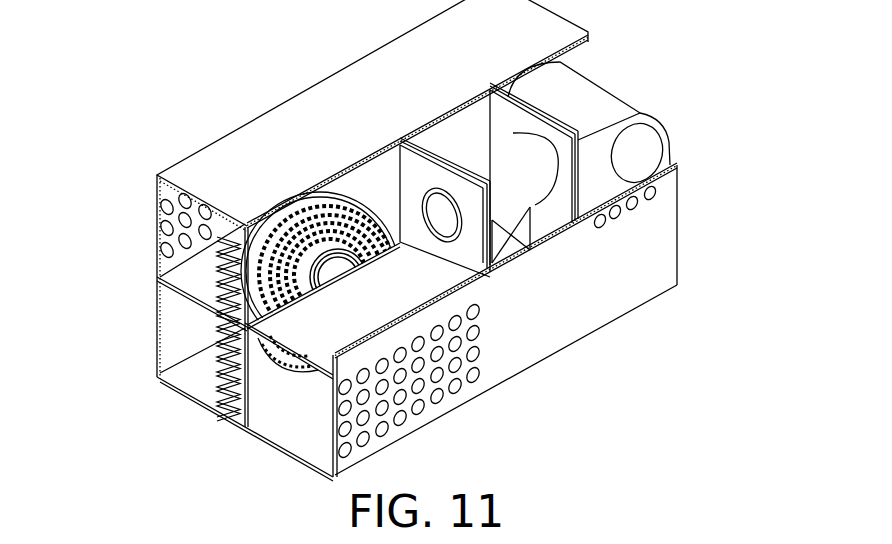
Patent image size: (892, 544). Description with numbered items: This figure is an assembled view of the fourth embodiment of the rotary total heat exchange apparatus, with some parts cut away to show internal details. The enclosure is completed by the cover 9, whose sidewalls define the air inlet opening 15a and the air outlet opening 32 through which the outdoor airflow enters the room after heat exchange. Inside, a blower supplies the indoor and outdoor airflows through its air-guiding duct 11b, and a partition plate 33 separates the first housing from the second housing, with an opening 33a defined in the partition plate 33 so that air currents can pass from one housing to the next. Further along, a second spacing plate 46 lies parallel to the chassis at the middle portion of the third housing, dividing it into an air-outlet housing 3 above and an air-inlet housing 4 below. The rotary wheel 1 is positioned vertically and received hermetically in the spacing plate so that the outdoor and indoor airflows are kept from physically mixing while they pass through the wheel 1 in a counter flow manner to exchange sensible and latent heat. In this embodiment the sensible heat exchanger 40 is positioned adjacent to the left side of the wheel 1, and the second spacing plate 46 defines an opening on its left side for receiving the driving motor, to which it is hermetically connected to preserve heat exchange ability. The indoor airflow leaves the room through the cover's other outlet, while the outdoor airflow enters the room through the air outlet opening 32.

The cover 9 is at (318, 103).
The rotary wheel 1 is at (164, 206).
The air-outlet housing 3 is at (200, 280).
The air-inlet housing 4 is at (200, 377).
The sensible heat exchanger 40 is at (233, 400).
The second spacing plate 46 is at (310, 338).
The partition plate 33 is at (530, 248).
The opening 33a is at (450, 220).
The air-guiding duct 11b is at (590, 110).
The air inlet opening 15a is at (640, 202).
The air outlet opening 32 is at (443, 378).